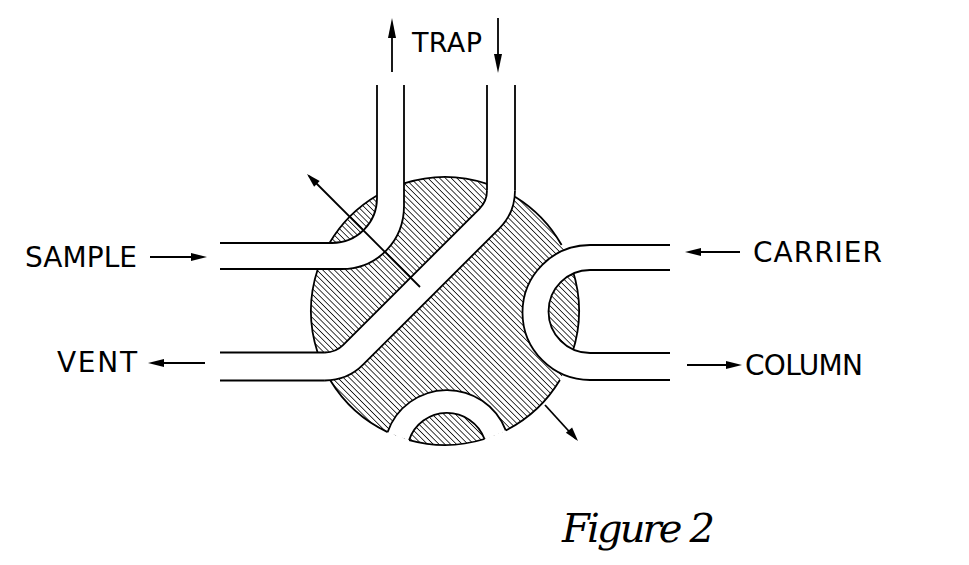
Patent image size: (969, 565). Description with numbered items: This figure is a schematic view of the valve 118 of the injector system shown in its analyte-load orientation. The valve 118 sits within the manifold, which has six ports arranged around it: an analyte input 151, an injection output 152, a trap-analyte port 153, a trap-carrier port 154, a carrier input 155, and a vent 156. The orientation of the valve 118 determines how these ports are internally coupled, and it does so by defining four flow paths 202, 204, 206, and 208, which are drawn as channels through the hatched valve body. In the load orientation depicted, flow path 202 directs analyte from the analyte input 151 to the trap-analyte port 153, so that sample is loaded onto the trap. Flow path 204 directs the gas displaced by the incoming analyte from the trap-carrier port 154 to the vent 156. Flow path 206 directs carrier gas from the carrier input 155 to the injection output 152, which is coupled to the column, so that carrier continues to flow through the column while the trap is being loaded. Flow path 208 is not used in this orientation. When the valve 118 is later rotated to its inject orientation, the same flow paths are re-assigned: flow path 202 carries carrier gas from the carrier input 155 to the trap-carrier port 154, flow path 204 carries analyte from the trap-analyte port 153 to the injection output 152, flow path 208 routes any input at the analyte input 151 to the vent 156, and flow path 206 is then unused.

The valve 118 is at (564, 199).
The analyte input 151 is at (257, 271).
The injection output 152 is at (640, 381).
The trap-analyte port 153 is at (373, 122).
The trap-carrier port 154 is at (516, 113).
The carrier input 155 is at (633, 272).
The vent 156 is at (250, 381).
The flow path 202 is at (330, 262).
The flow path 204 is at (325, 357).
The flow path 206 is at (556, 265).
The flow path 208 is at (395, 432).